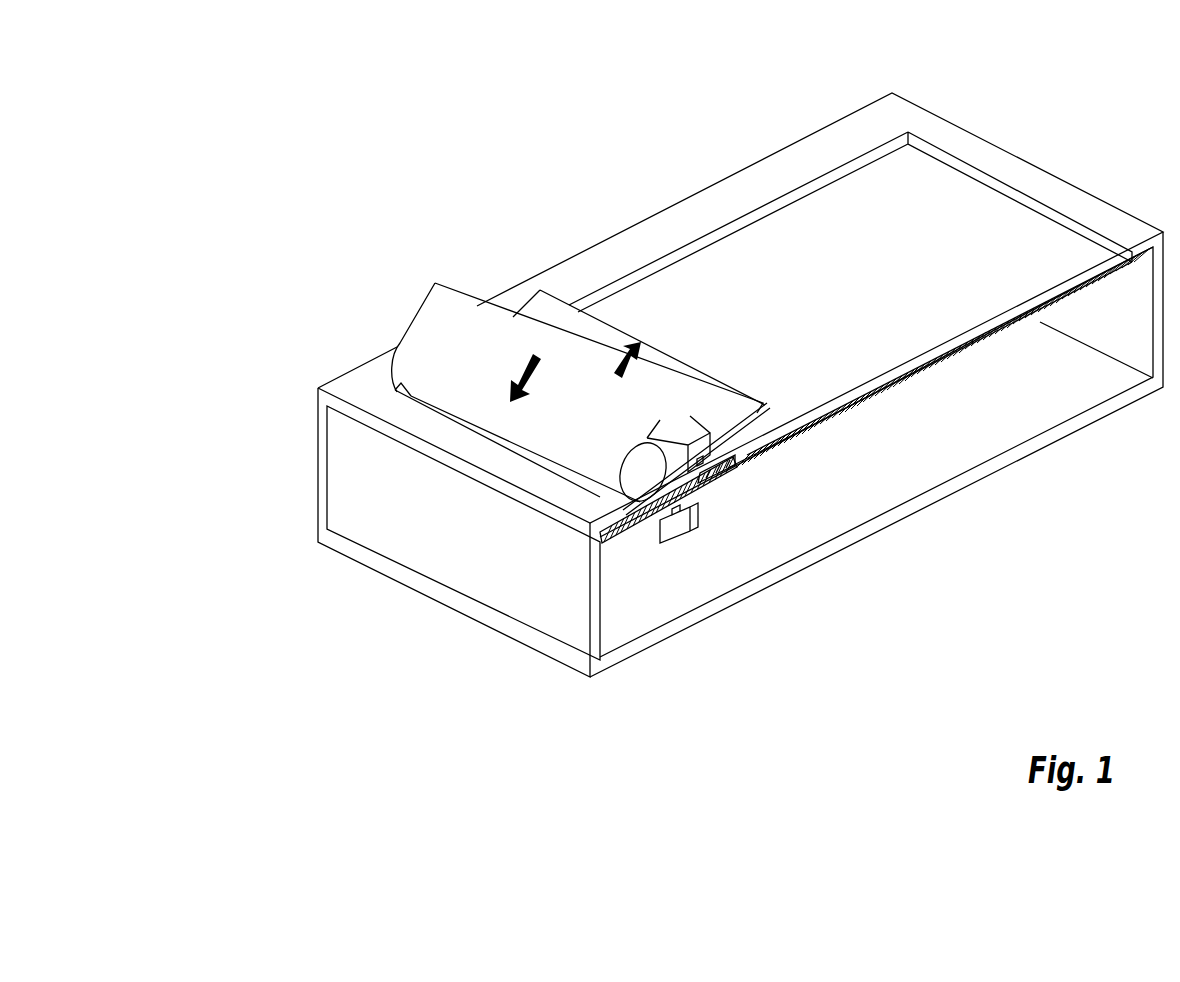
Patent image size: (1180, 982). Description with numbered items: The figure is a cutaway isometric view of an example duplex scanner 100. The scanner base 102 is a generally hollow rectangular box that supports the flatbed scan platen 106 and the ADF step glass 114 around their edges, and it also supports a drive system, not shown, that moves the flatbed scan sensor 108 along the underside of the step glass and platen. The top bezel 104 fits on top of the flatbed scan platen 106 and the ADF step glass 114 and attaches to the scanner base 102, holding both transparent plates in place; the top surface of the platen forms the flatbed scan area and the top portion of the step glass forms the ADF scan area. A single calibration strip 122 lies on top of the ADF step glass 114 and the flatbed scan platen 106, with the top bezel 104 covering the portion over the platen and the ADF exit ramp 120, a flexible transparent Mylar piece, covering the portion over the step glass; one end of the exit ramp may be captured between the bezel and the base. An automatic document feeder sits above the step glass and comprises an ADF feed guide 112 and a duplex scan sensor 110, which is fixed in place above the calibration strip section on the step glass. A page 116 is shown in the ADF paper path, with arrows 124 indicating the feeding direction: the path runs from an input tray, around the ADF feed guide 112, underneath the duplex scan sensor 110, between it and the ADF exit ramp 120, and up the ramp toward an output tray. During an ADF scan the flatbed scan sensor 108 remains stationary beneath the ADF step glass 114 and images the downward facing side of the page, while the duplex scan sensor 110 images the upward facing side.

The scanner 100 is at (250, 100).
The scanner base 102 is at (432, 510).
The top bezel 104 is at (753, 457).
The flatbed scan platen 106 is at (962, 218).
The flatbed scan sensor 108 is at (683, 527).
The duplex scan sensor 110 is at (680, 427).
The ADF feed guide 112 is at (628, 470).
The ADF step glass 114 is at (617, 527).
The page 116 is at (435, 307).
The ADF exit ramp 120 is at (697, 487).
The calibration strip 122 is at (748, 463).
The arrows 124 is at (520, 371).